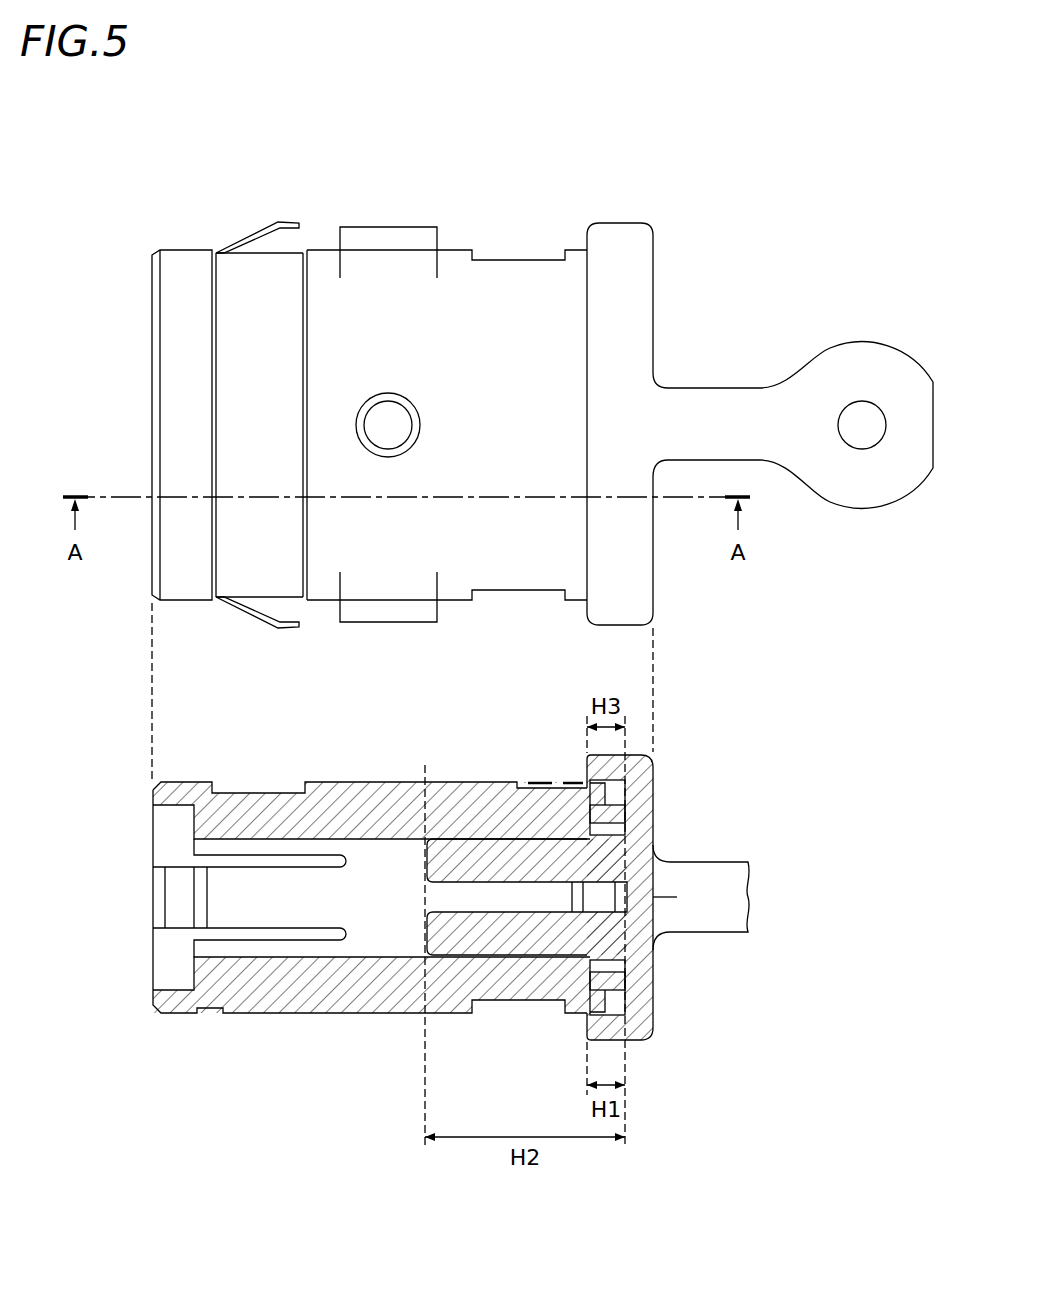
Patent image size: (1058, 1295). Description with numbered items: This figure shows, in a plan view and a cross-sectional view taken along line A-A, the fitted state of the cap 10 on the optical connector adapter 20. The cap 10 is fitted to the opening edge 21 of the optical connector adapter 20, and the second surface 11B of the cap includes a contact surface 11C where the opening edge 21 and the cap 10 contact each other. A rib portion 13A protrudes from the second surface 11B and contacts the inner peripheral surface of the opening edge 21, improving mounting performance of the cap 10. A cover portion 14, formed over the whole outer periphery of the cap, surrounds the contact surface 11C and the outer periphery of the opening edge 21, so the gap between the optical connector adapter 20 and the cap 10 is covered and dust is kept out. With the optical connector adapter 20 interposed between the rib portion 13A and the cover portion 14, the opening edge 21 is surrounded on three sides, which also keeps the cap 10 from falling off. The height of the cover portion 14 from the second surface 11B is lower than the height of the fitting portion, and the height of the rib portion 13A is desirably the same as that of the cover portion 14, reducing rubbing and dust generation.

The cap 10 is at (839, 330).
The optical connector adapter 20 is at (472, 240).
The opening edge 21 is at (602, 797).
The rib portion 13A is at (613, 817).
The contact surface 11C is at (706, 905).
The second surface 11B is at (627, 998).
The cover portion 14 is at (613, 1027).